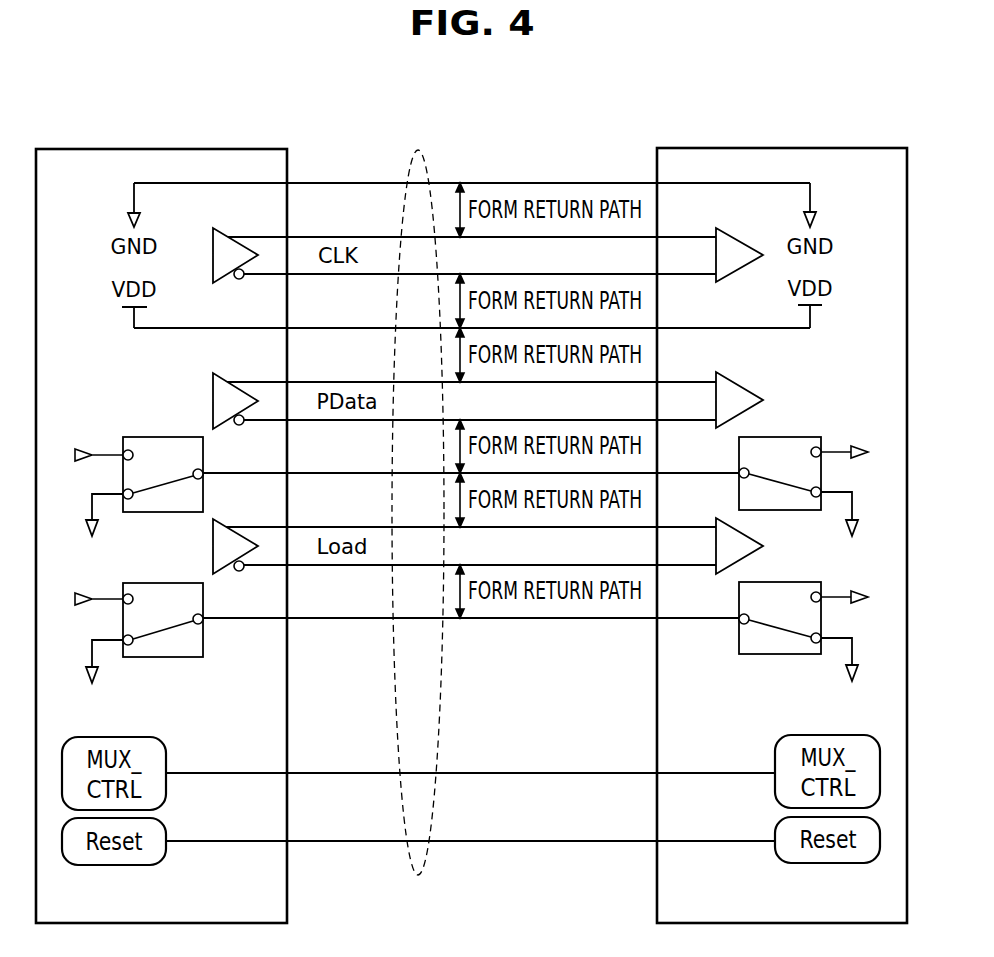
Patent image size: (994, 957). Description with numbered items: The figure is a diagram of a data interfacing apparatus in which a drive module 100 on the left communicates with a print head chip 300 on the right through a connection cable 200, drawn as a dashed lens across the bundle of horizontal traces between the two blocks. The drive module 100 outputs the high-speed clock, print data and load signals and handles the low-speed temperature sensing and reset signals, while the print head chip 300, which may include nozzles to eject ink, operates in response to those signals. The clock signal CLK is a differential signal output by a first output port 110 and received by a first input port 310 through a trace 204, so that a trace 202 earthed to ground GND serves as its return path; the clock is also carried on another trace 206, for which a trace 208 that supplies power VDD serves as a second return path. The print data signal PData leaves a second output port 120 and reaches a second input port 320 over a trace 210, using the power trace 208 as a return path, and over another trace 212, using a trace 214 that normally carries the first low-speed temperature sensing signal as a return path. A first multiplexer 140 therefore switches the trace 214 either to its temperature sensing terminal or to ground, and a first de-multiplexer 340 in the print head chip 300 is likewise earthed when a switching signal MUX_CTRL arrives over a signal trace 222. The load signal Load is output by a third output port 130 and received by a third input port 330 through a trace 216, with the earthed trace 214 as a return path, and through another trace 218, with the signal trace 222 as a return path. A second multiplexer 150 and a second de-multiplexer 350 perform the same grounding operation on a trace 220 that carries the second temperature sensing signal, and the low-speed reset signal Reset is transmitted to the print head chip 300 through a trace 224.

The drive module 100 is at (223, 149).
The first output port 110 is at (227, 232).
The second output port 120 is at (226, 380).
The third output port 130 is at (226, 525).
The first multiplexer 140 is at (163, 437).
The second multiplexer 150 is at (163, 583).
The connection cable 200 is at (419, 150).
The trace 202 is at (308, 183).
The trace 204 is at (308, 237).
The trace 206 is at (308, 274).
The trace 208 is at (308, 328).
The trace 210 is at (308, 382).
The trace 212 is at (308, 420).
The trace 214 is at (308, 473).
The trace 216 is at (308, 527).
The trace 218 is at (308, 565).
The trace 220 is at (308, 618).
The signal trace 222 is at (308, 773).
The trace 224 is at (308, 841).
The print head chip 300 is at (843, 148).
The first input port 310 is at (716, 232).
The second input port 320 is at (716, 376).
The third input port 330 is at (716, 522).
The first de-multiplexer 340 is at (788, 437).
The second de-multiplexer 350 is at (788, 583).